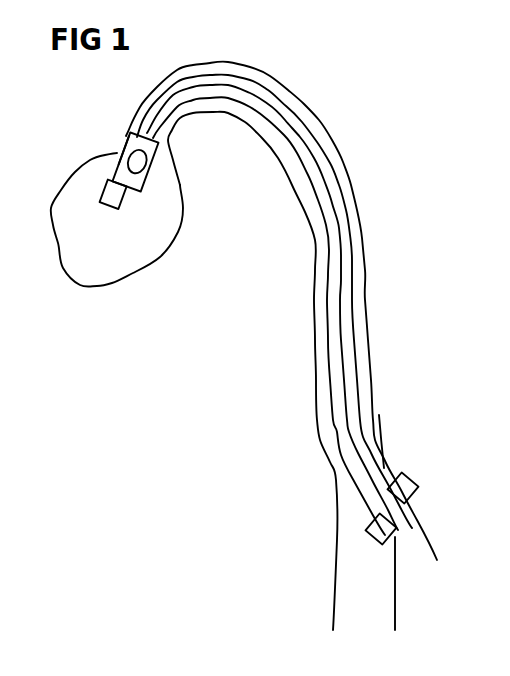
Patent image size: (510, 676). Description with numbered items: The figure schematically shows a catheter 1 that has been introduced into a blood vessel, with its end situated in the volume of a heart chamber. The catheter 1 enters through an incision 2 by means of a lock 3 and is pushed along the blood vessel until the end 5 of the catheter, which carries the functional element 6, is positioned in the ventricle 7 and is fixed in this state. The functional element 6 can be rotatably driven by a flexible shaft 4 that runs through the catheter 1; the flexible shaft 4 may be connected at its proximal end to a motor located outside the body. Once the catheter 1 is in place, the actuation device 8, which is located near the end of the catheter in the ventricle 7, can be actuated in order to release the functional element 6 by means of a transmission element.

The catheter 1 is at (344, 203).
The incision 2 is at (394, 444).
The lock 3 is at (406, 492).
The flexible shaft 4 is at (341, 264).
The end of the catheter 5 is at (148, 160).
The functional element 6 is at (120, 205).
The ventricle 7 is at (97, 286).
The actuation device 8 is at (118, 152).